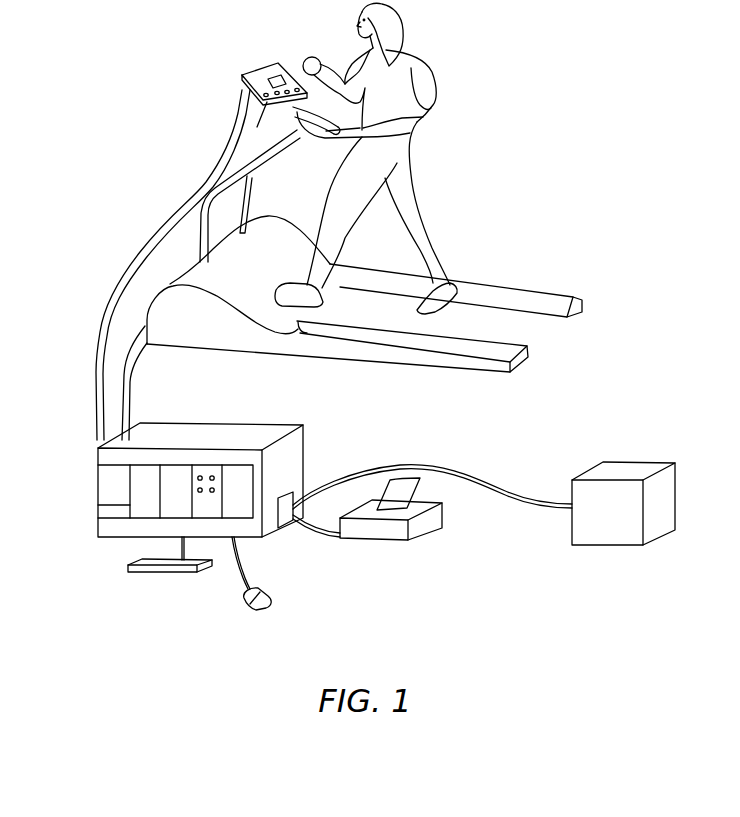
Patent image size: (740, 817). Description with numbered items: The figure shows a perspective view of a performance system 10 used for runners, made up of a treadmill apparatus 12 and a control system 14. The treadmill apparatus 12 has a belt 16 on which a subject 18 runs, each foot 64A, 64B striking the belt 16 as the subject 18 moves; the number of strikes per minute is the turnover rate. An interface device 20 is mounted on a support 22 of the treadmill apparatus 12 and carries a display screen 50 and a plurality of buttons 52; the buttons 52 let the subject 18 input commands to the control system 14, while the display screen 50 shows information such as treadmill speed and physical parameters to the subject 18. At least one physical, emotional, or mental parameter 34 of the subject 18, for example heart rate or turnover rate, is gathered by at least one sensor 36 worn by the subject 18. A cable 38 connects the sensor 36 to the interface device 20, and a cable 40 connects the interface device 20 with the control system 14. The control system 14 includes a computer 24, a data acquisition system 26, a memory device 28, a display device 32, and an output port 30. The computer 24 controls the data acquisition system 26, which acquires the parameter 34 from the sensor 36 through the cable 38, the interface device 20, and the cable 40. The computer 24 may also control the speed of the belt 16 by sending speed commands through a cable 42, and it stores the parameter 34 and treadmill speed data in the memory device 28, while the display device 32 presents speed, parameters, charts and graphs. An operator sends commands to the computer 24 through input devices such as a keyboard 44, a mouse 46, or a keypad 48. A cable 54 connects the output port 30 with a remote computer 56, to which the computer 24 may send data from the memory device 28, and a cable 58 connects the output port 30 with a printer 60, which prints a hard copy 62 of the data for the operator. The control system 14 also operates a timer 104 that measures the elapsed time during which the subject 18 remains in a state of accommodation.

The performance system 10 is at (151, 88).
The treadmill apparatus 12 is at (478, 258).
The control system 14 is at (220, 407).
The belt 16 is at (550, 310).
The subject 18 is at (407, 60).
The interface device 20 is at (255, 70).
The support 22 is at (253, 180).
The computer 24 is at (108, 484).
The data acquisition system 26 is at (143, 475).
The memory device 28 is at (182, 475).
The output port 30 is at (278, 525).
The display device 32 is at (240, 475).
The physical, emotional, or mental parameter 34 is at (423, 117).
The sensor 36 is at (411, 134).
The cable 38 is at (325, 142).
The cable 40 is at (175, 204).
The cable 42 is at (127, 373).
The keyboard 44 is at (130, 567).
The mouse 46 is at (271, 604).
The keypad 48 is at (282, 69).
The display screen 50 is at (241, 75).
The buttons 52 is at (256, 126).
The cable 54 is at (533, 492).
The remote computer 56 is at (603, 540).
The cable 58 is at (318, 536).
The printer 60 is at (392, 538).
The hard copy 62 is at (410, 493).
The foot 64A is at (281, 289).
The foot 64B is at (416, 308).
The timer 104 is at (108, 510).